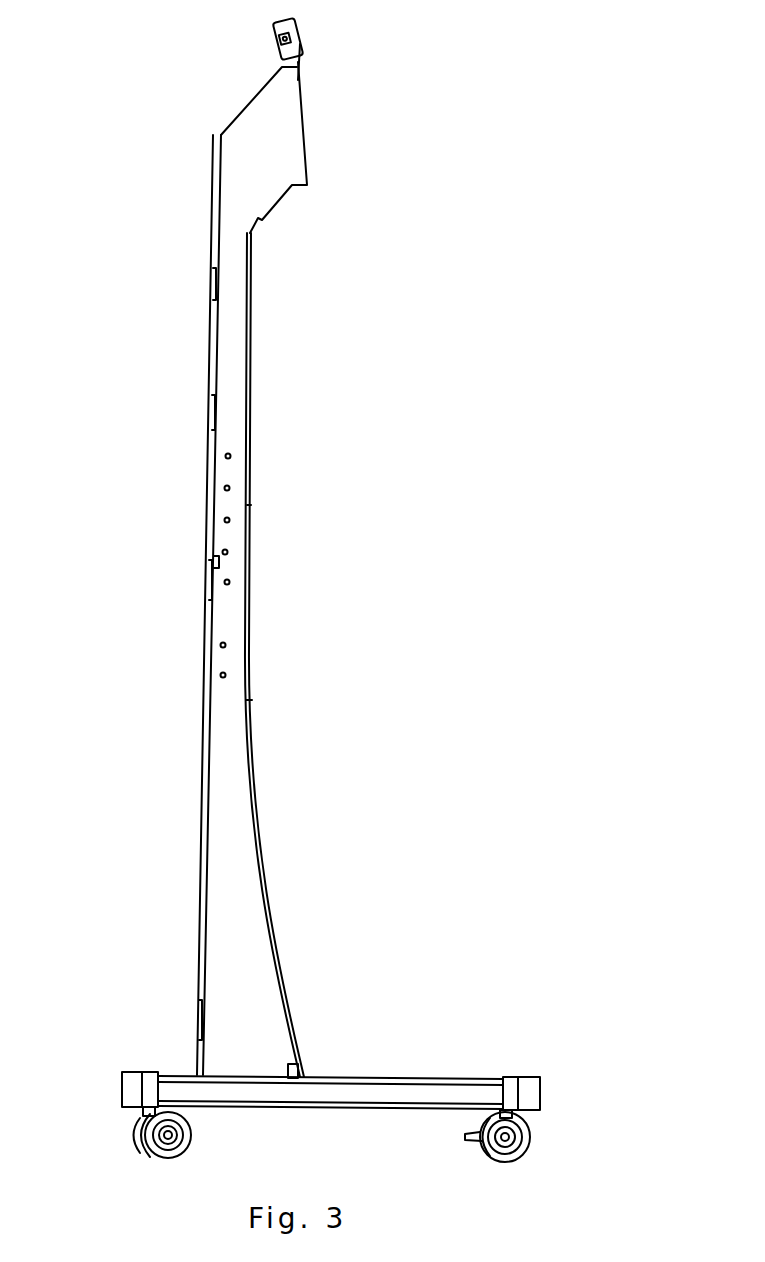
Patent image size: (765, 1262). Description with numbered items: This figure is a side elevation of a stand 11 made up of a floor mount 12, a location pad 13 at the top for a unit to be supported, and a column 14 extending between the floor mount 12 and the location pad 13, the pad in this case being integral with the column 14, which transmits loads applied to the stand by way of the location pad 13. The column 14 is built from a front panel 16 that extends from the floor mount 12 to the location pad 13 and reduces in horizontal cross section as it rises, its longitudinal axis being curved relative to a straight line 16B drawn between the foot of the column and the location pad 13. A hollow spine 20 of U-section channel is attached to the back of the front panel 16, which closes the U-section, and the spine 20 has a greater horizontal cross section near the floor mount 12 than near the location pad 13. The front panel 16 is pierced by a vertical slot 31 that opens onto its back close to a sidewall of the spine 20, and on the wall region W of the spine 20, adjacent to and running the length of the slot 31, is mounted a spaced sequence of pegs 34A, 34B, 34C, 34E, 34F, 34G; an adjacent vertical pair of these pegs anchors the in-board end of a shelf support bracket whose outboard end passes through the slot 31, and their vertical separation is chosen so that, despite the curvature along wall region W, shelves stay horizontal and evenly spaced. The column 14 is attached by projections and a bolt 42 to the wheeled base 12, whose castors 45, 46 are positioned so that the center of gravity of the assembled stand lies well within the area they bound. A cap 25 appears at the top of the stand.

The stand 11 is at (231, 606).
The floor mount 12 is at (338, 1082).
The location pad 13 is at (305, 115).
The column 14 is at (232, 378).
The front panel 16 is at (251, 413).
The straight line 16B is at (235, 698).
The hollow spine 20 is at (226, 440).
The top cap 25 is at (275, 24).
The slot 31 is at (251, 515).
The peg 34A is at (227, 675).
The peg 34B is at (222, 551).
The peg 34C is at (230, 582).
The peg 34E is at (223, 520).
The peg 34F is at (231, 486).
The peg 34G is at (232, 453).
The bolt 42 is at (292, 1060).
The castor 45 is at (515, 1150).
The castor 46 is at (135, 1147).
The wall region W is at (213, 560).